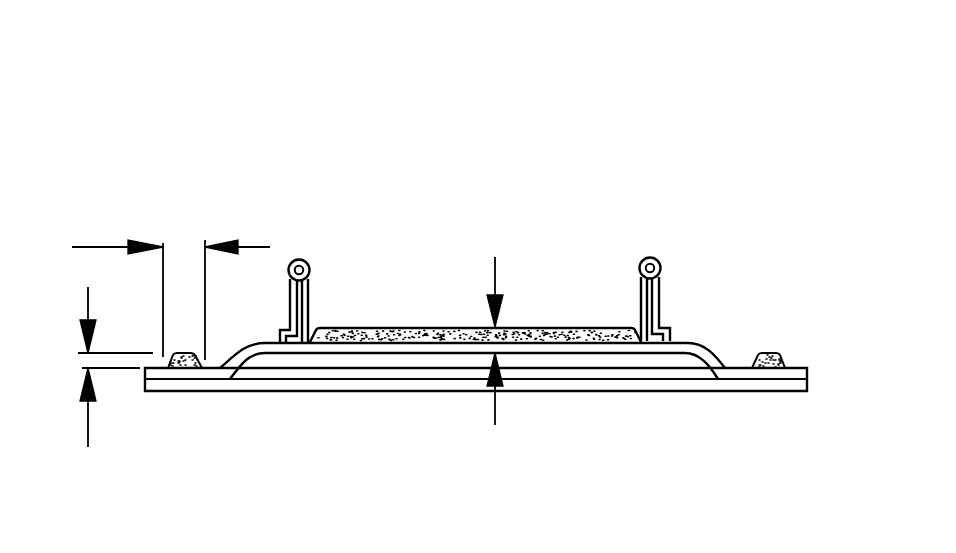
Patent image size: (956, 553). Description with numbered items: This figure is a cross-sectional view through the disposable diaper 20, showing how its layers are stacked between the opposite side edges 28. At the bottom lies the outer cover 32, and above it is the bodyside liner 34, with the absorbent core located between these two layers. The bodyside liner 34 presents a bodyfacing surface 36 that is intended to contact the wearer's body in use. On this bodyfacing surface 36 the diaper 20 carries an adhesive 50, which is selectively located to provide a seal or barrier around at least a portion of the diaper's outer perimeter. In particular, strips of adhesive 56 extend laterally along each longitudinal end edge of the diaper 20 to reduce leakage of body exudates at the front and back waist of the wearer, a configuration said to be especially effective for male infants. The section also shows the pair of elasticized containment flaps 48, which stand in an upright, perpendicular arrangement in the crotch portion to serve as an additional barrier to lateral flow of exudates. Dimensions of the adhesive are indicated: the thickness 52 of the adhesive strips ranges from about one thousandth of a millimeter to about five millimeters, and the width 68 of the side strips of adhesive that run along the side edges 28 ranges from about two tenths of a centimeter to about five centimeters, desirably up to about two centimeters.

The diaper 20 is at (702, 100).
The side edges 28 is at (807, 377).
The outer cover 32 is at (775, 391).
The bodyside liner 34 is at (793, 365).
The bodyfacing surface 36 is at (640, 370).
The containment flaps 48 is at (311, 270).
The adhesive 50 is at (578, 327).
The thickness 52 is at (292, 340).
The strips of adhesive 56 is at (373, 328).
The width 68 is at (151, 297).